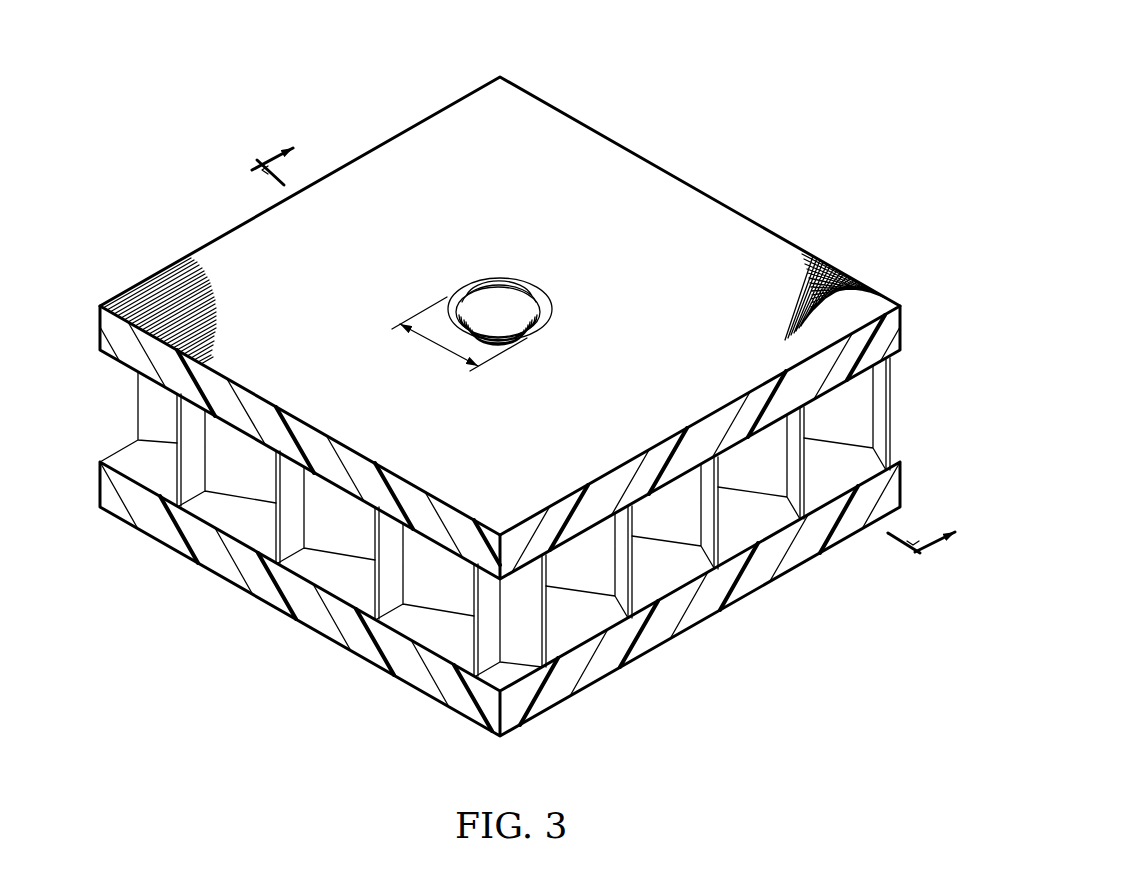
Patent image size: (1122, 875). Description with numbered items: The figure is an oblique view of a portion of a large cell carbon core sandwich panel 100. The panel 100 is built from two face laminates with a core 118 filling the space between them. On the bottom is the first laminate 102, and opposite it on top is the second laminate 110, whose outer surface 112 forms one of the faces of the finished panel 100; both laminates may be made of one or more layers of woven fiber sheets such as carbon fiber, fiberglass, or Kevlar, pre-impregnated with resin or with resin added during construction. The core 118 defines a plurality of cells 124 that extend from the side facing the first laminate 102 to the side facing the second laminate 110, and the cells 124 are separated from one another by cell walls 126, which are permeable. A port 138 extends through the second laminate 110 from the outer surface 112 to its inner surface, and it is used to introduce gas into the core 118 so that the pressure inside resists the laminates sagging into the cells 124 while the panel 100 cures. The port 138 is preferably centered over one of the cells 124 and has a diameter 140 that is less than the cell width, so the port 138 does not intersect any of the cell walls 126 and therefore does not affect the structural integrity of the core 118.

The panel 100 is at (713, 66).
The first laminate 102 is at (650, 655).
The second laminate 110 is at (760, 220).
The outer surface 112 is at (437, 121).
The core 118 is at (890, 410).
The cells 124 is at (248, 452).
The cell walls 126 is at (172, 478).
The port 138 is at (520, 270).
The diameter 140 is at (441, 348).